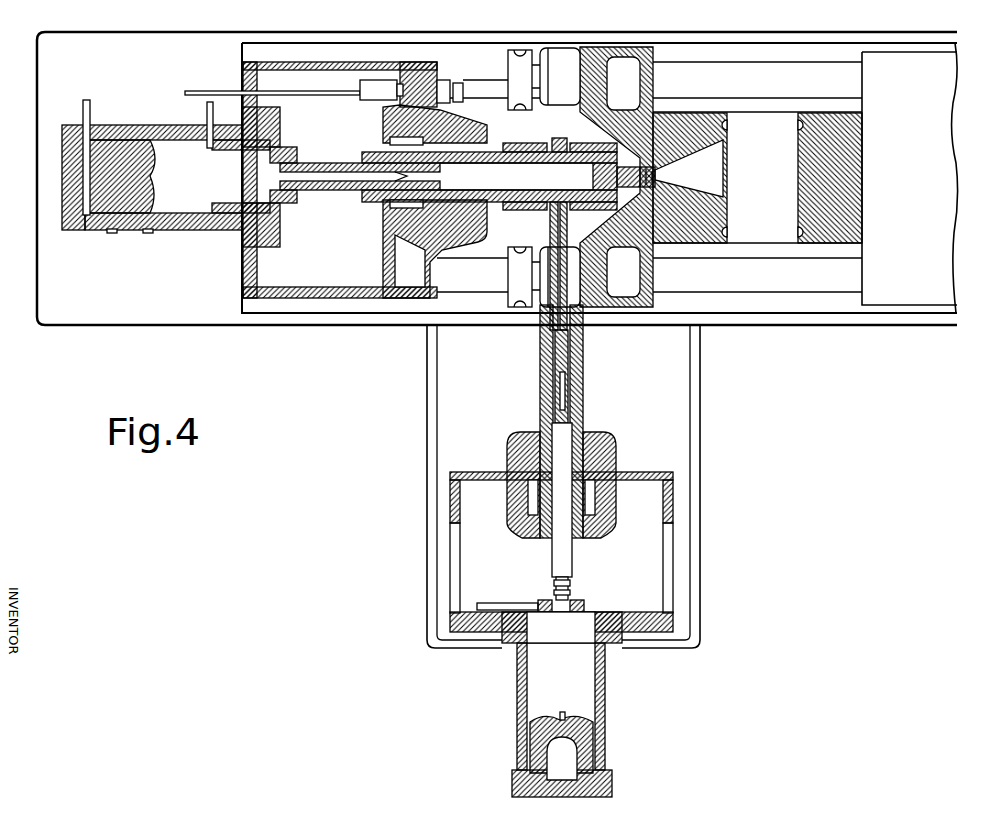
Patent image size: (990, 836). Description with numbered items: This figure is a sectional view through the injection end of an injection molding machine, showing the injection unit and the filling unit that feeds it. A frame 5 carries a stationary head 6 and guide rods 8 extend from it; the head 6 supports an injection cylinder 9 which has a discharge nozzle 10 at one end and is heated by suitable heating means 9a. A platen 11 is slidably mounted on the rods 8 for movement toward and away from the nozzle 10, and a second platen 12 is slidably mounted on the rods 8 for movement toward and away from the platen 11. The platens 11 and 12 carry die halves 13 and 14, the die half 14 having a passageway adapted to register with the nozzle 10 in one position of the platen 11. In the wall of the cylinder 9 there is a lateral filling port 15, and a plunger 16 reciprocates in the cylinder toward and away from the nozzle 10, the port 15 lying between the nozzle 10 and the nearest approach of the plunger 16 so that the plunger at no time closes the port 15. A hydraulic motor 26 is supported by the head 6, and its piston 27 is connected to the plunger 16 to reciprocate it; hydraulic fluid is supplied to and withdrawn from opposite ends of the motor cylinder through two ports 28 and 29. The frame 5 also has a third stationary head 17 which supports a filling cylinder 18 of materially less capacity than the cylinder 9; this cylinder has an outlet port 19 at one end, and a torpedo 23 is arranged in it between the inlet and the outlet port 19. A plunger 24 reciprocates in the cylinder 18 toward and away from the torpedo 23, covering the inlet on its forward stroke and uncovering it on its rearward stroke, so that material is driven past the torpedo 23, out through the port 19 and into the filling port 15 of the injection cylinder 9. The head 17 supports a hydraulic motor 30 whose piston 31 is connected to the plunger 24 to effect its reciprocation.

The frame 5 is at (747, 320).
The stationary head 6 is at (308, 298).
The guide rods 8 is at (818, 285).
The injection cylinder 9 is at (495, 152).
The heating means 9a is at (515, 144).
The discharge nozzle 10 is at (657, 167).
The platen 11 is at (650, 308).
The second platen 12 is at (917, 292).
The die half 13 is at (798, 198).
The die half 14 is at (723, 233).
The lateral filling port 15 is at (553, 190).
The plunger 16 is at (390, 227).
The third stationary head 17 is at (452, 496).
The filling cylinder 18 is at (580, 426).
The outlet port 19 is at (545, 332).
The torpedo 23 is at (557, 385).
The plunger 24 is at (557, 550).
The hydraulic motor 26 is at (177, 223).
The piston 27 is at (198, 190).
The port 28 is at (86, 101).
The port 29 is at (207, 108).
The hydraulic motor 30 is at (605, 703).
The piston 31 is at (552, 693).